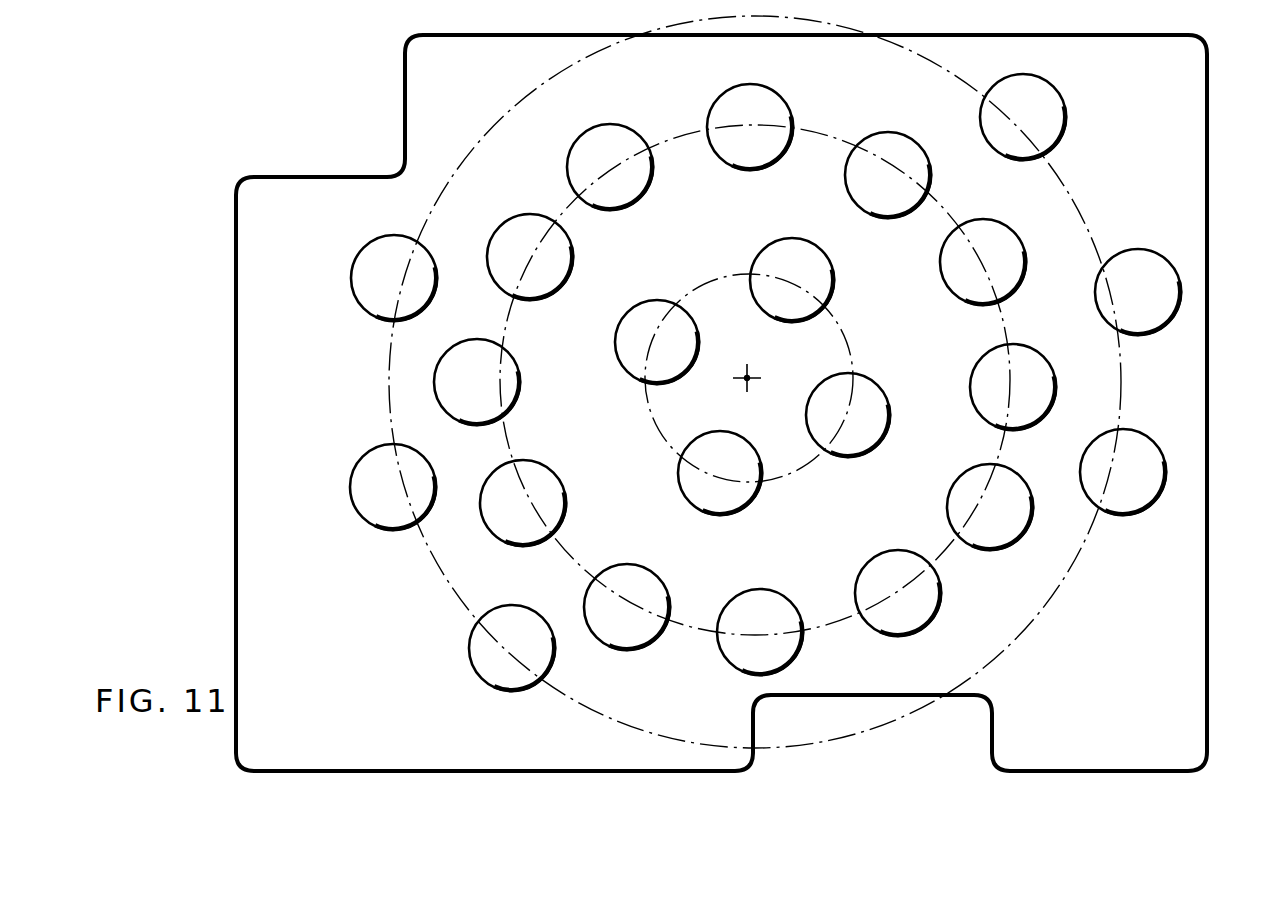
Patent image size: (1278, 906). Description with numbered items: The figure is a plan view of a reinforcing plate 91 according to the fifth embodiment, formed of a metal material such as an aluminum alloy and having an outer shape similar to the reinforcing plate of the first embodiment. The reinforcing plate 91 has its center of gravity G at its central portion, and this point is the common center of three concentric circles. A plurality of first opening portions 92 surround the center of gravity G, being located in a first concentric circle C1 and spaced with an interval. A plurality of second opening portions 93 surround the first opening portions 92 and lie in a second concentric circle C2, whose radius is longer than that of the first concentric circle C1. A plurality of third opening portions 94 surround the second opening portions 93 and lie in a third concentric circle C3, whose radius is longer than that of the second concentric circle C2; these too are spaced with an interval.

The reinforcing plate 91 is at (1207, 128).
The first opening portions 92 is at (776, 263).
The second opening portions 93 is at (508, 386).
The third opening portions 94 is at (1050, 133).
The center of gravity G is at (756, 378).
The first concentric circle C1 is at (655, 427).
The second concentric circle C2 is at (827, 137).
The third concentric circle C3 is at (1088, 540).